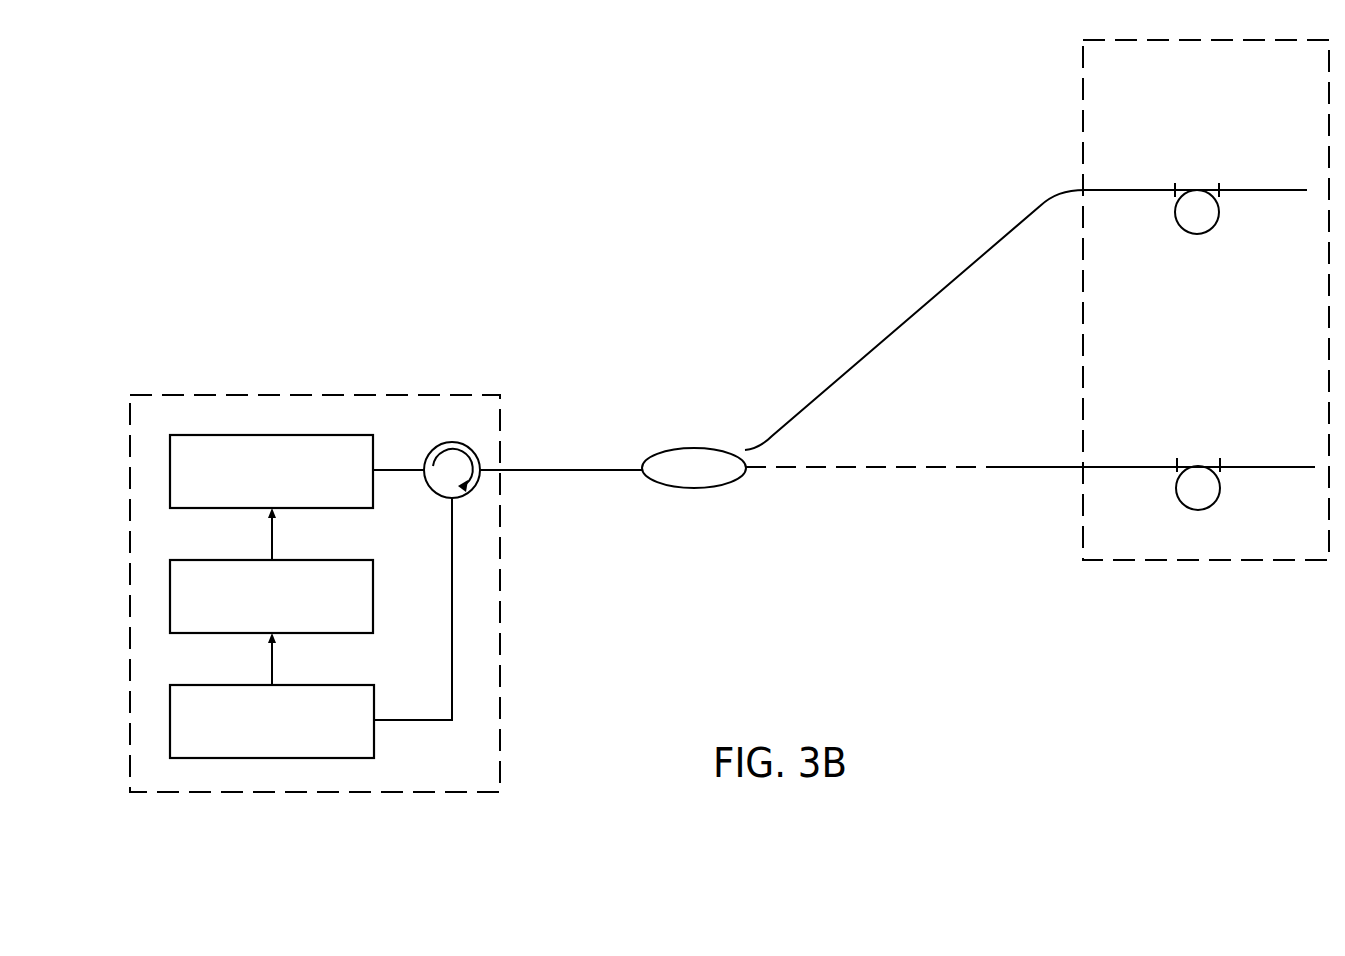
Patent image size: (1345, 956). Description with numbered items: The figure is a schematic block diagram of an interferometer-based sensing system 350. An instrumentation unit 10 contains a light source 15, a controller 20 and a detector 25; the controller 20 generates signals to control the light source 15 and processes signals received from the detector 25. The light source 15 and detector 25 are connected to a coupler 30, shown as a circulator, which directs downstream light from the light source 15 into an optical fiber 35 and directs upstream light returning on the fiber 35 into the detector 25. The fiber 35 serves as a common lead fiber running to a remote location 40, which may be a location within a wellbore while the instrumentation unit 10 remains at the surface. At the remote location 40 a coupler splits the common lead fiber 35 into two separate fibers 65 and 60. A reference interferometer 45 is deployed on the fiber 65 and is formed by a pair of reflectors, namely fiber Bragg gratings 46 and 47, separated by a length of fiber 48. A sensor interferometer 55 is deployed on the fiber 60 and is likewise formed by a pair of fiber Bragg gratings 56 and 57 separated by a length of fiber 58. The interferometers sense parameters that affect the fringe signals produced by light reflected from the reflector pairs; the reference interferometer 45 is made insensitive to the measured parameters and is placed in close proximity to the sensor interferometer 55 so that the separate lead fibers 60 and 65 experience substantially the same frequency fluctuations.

The sensing system 350 is at (699, 219).
The instrumentation unit 10 is at (380, 793).
The light source 15 is at (170, 468).
The controller 20 is at (170, 583).
The detector 25 is at (170, 708).
The coupler 30 is at (452, 442).
The optical fiber 35 is at (557, 471).
The remote location 40 is at (693, 489).
The reference interferometer 45 is at (1198, 173).
The fiber Bragg grating 46 is at (1174, 188).
The fiber Bragg grating 47 is at (1222, 188).
The length of fiber 48 is at (1196, 234).
The sensor interferometer 55 is at (1201, 448).
The fiber Bragg grating 56 is at (1176, 463).
The fiber Bragg grating 57 is at (1224, 463).
The length of fiber 58 is at (1197, 510).
The separate fiber 60 is at (893, 468).
The separate fiber 65 is at (958, 280).